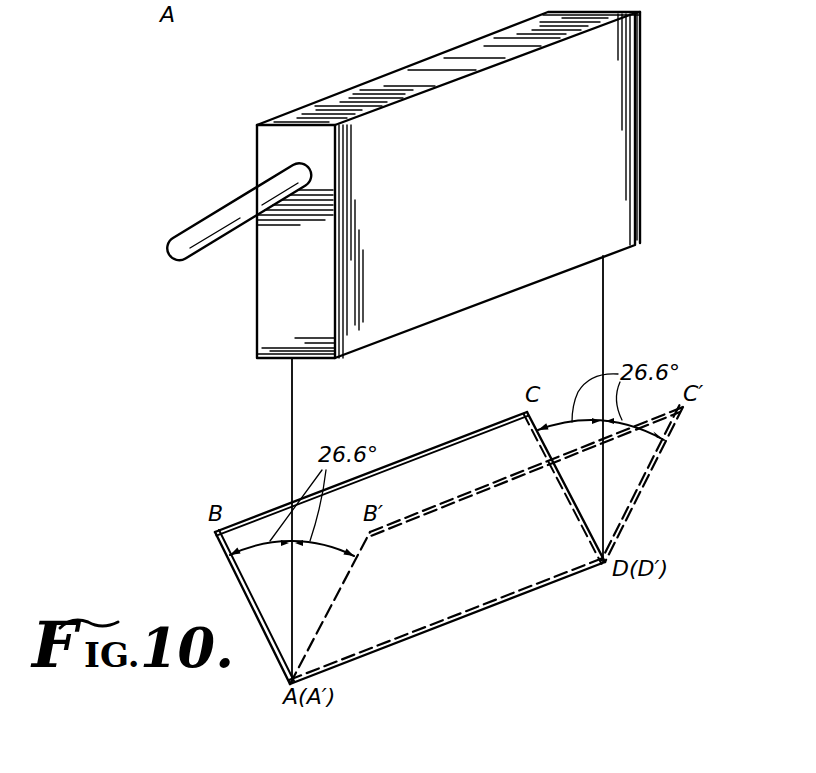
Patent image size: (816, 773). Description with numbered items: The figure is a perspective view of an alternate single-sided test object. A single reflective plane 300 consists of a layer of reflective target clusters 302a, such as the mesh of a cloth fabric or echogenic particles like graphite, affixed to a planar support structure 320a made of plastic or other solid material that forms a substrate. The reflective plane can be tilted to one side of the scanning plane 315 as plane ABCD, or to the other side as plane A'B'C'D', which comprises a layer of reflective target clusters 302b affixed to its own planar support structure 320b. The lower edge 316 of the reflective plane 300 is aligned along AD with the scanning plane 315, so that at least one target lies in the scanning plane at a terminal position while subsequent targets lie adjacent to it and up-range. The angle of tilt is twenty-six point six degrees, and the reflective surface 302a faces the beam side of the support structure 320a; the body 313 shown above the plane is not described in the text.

The light source housing 313 is at (607, 135).
The scanning plane 315 is at (575, 344).
The reflective plane 300 is at (243, 601).
The layer of reflective target clusters 302a is at (249, 530).
The layer of reflective target clusters 302b is at (490, 508).
The planar support structure 320a is at (222, 563).
The planar support structure 320b is at (332, 607).
The lower edge 316 is at (529, 591).